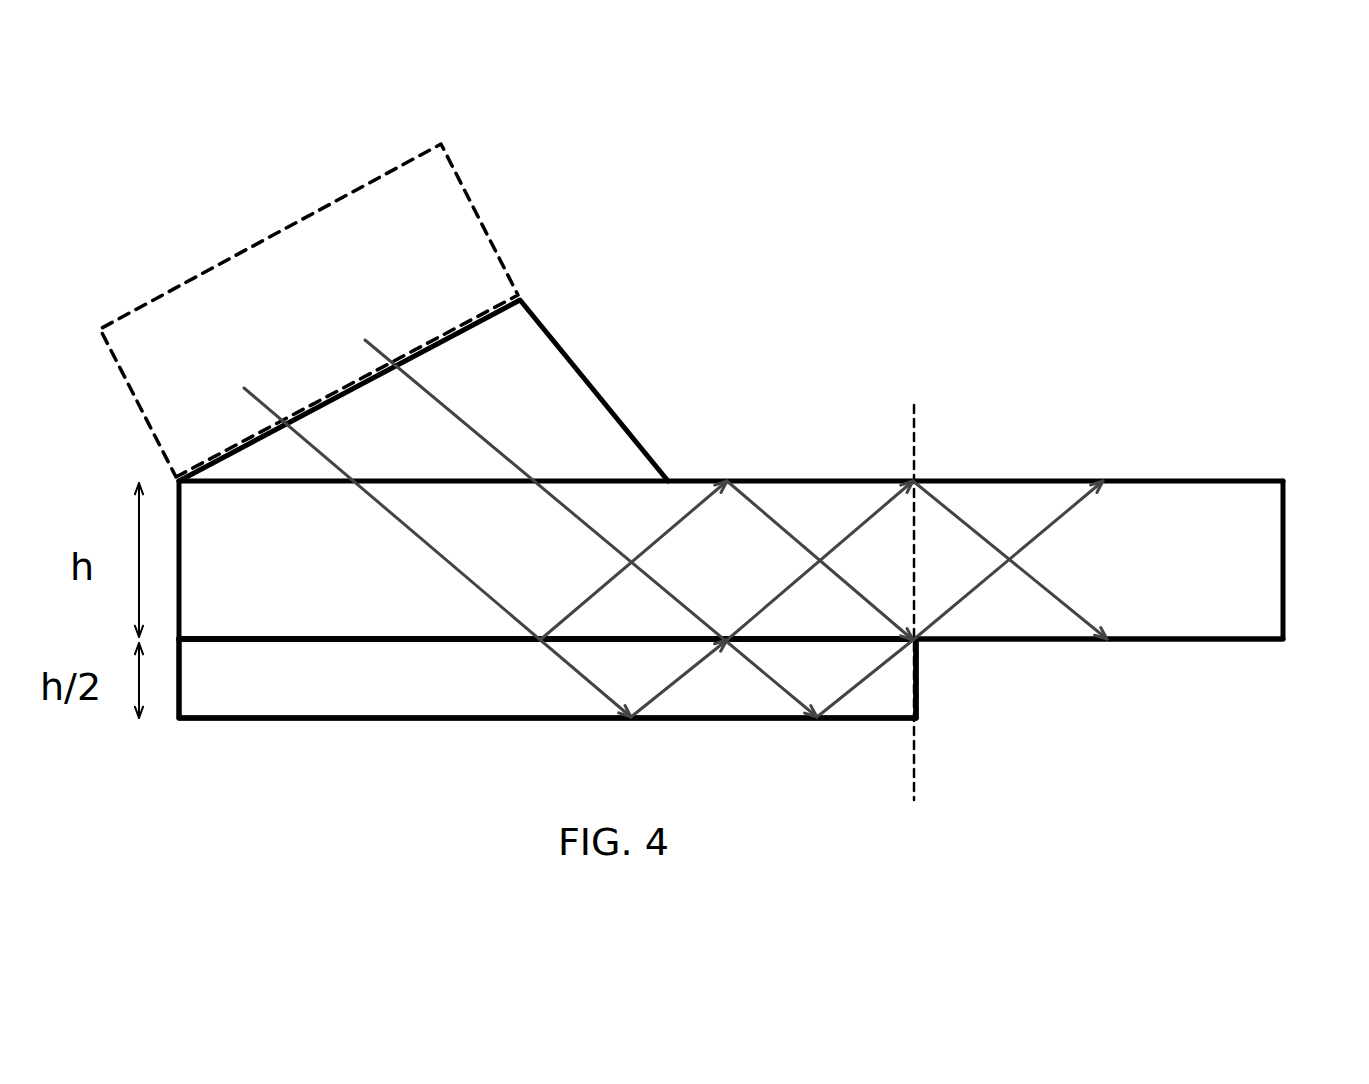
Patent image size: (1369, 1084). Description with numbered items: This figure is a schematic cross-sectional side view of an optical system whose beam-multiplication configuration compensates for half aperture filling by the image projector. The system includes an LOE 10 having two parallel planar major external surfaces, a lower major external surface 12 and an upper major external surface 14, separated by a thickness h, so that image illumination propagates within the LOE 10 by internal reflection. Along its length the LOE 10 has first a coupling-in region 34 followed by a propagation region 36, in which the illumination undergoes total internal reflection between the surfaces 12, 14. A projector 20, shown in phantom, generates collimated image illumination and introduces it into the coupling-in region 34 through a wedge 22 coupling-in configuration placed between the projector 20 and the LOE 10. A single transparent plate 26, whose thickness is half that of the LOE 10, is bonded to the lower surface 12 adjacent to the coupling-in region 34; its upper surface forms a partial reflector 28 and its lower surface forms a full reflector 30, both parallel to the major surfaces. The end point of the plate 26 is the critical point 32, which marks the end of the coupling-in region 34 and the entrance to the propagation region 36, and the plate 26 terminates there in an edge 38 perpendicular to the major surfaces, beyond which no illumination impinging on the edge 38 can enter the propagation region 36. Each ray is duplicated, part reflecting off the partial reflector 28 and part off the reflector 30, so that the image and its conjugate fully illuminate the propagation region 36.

The LOE 10 is at (1285, 572).
The lower major external surface 12 is at (1242, 643).
The major external surface 14 is at (1160, 478).
The projector 20 is at (465, 237).
The wedge 22 is at (543, 382).
The transparent plate 26 is at (303, 678).
The partial reflector 28 is at (257, 637).
The reflector 30 is at (423, 725).
The critical point 32 is at (925, 652).
The coupling-in region 34 is at (778, 508).
The propagation region 36 is at (998, 500).
The edge 38 is at (918, 707).